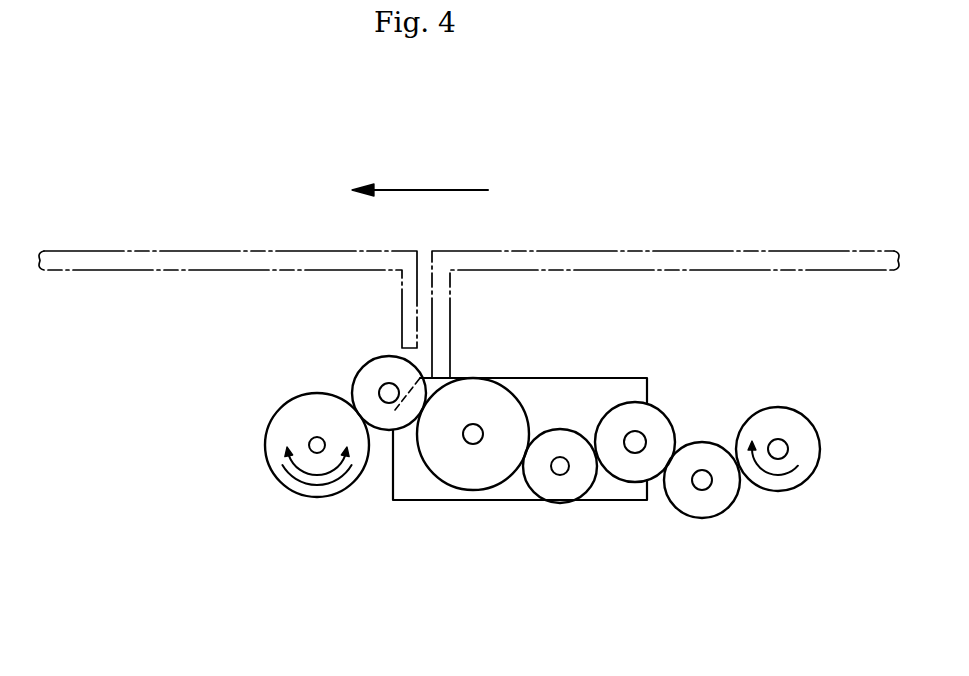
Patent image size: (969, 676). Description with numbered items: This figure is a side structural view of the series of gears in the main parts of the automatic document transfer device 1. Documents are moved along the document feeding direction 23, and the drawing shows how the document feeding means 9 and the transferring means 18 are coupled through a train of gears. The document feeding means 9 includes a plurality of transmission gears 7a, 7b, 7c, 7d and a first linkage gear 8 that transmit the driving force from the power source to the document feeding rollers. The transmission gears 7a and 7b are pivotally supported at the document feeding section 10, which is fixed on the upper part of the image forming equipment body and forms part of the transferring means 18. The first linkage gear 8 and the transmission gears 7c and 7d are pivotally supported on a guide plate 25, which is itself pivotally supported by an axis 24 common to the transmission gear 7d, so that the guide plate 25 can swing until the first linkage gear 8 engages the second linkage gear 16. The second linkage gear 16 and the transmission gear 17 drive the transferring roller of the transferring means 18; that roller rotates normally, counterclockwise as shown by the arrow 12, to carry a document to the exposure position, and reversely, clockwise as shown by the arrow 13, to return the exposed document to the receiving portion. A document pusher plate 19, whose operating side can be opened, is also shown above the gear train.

The automatic document transfer device 1 is at (570, 200).
The document feeding section 10 is at (738, 198).
The document pusher plate 19 is at (205, 272).
The document feeding direction 23 is at (440, 190).
The document feeding means 9 is at (660, 376).
The guide plate 25 is at (417, 483).
The transmission gear 17 is at (338, 497).
The arrow 12 is at (288, 478).
The arrow 13 is at (302, 486).
The second linkage gear 16 is at (380, 430).
The transferring means 18 is at (335, 377).
The first linkage gear 8 is at (473, 466).
The transmission gear 7a is at (795, 491).
The transmission gear 7b is at (701, 496).
The transmission gear 7c is at (620, 466).
The transmission gear 7d is at (560, 490).
The axis 24 is at (636, 449).